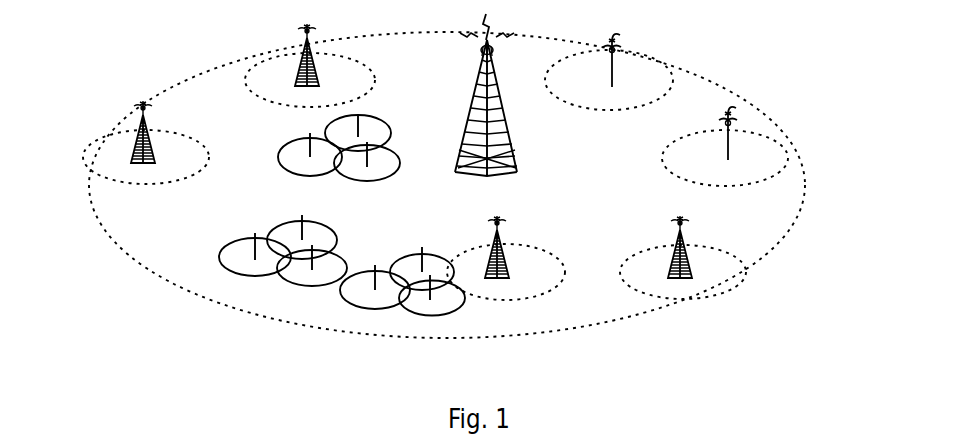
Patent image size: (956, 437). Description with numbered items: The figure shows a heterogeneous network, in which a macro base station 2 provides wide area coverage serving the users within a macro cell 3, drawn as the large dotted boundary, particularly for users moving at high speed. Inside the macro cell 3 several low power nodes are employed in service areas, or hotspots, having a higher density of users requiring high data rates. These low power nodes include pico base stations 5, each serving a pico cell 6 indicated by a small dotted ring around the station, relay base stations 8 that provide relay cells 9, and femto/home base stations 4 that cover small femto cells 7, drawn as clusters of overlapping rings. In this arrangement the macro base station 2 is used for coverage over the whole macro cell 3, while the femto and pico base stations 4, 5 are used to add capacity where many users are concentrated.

The macro base station 2 is at (500, 78).
The macro cell 3 is at (142, 262).
The femto/home base stations 4 is at (280, 147).
The pico base stations 5 is at (313, 49).
The pico cells 6 is at (703, 299).
The femto cells 7 is at (452, 315).
The relay base stations 8 is at (617, 70).
The relay cells 9 is at (742, 187).